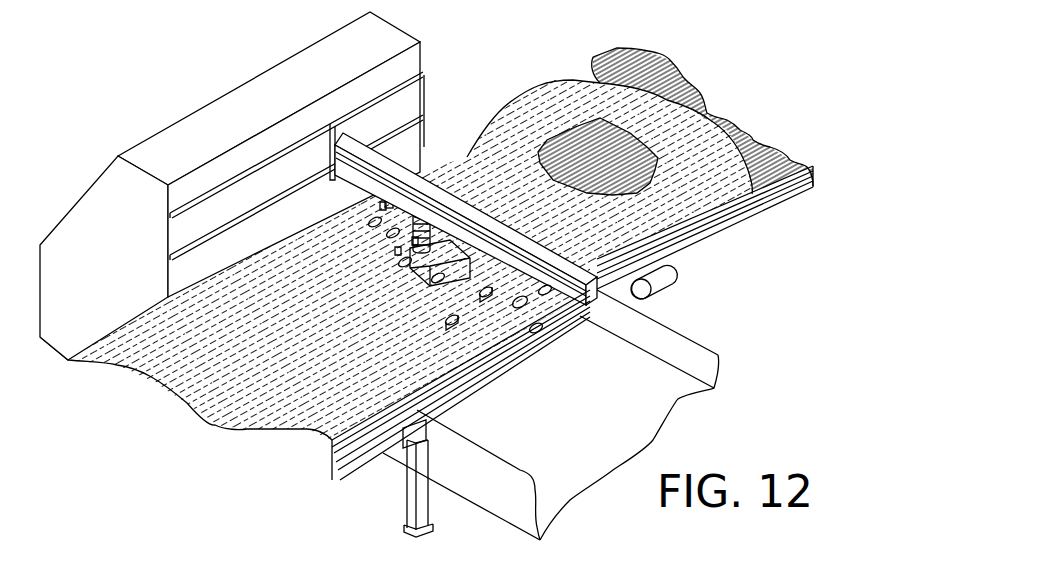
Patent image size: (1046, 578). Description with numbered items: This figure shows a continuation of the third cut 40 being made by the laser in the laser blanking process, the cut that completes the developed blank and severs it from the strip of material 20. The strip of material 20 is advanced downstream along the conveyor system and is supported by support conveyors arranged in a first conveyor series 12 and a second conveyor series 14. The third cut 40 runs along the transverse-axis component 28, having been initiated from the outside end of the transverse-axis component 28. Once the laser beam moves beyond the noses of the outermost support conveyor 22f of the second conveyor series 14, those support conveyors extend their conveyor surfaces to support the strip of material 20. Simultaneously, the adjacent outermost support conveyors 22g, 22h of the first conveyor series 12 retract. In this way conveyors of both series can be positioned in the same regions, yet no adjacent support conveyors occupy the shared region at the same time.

The first conveyor series 12 is at (364, 471).
The second conveyor series 14 is at (715, 254).
The strip of material 20 is at (527, 93).
The transverse-axis component 28 is at (415, 157).
The outermost support conveyor 22f is at (531, 336).
The outermost support conveyor 22g is at (483, 304).
The outermost support conveyor 22h is at (449, 331).
The third cut 40 is at (470, 357).